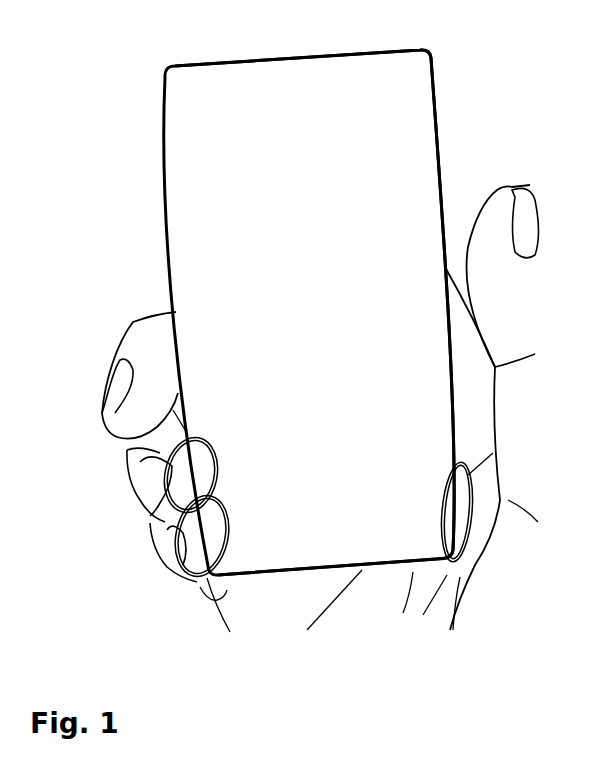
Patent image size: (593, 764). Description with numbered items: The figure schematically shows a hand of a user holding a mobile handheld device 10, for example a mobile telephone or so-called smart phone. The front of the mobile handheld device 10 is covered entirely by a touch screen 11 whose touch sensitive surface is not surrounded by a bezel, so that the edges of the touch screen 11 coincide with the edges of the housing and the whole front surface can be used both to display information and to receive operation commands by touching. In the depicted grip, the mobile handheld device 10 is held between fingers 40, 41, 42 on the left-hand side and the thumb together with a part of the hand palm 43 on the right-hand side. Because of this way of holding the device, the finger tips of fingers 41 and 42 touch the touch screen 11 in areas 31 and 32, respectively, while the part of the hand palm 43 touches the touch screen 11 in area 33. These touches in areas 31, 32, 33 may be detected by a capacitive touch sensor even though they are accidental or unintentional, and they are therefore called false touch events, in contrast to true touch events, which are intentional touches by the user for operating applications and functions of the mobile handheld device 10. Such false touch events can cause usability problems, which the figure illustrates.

The mobile handheld device 10 is at (164, 65).
The touch screen 11 is at (402, 118).
The area 31 is at (210, 453).
The area 32 is at (227, 528).
The area 33 is at (445, 492).
The finger 40 is at (130, 342).
The finger 41 is at (140, 490).
The finger 42 is at (165, 547).
The part of hand palm 43 is at (482, 532).